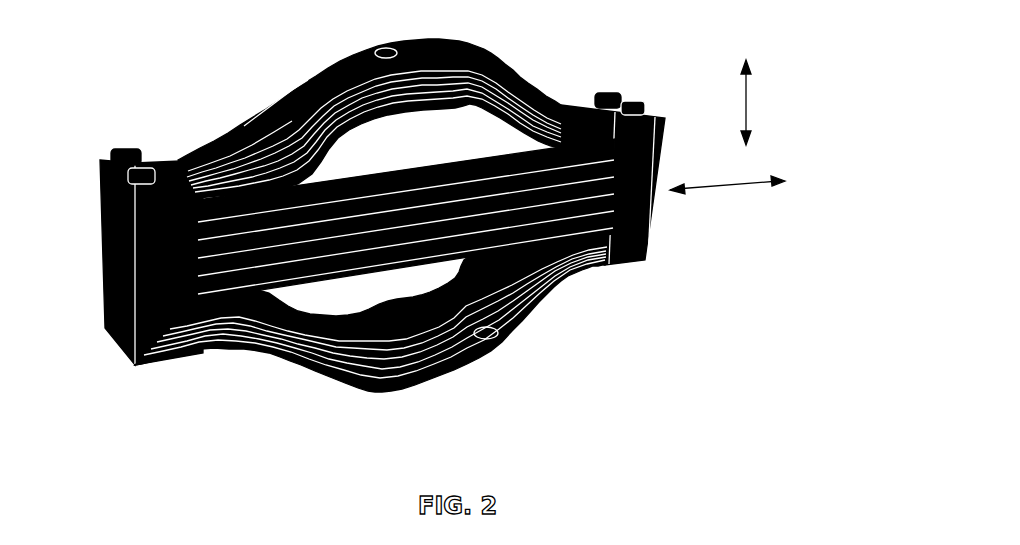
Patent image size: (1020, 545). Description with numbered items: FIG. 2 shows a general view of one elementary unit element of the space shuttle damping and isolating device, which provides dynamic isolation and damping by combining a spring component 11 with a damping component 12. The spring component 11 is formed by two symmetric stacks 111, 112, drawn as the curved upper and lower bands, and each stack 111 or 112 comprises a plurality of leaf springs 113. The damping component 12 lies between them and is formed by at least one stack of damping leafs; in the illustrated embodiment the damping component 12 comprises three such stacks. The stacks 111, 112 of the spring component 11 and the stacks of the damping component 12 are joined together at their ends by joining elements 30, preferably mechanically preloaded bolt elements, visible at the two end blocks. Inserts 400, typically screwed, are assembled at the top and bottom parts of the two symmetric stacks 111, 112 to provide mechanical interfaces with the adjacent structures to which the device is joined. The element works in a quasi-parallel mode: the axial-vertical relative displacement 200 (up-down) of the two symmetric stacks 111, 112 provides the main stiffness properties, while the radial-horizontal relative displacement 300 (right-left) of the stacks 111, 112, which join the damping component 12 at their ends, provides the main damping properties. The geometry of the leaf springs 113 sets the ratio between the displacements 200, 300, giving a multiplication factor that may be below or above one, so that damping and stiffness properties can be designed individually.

The spring component 11 is at (553, 100).
The damping component 12 is at (430, 260).
The stack 111 is at (220, 117).
The stack 112 is at (243, 347).
The leaf spring 113 is at (267, 87).
The insert 400 is at (370, 40).
The joining element 30 is at (117, 143).
The axial-vertical relative displacement 200 is at (778, 102).
The radial-horizontal relative displacement 300 is at (743, 200).